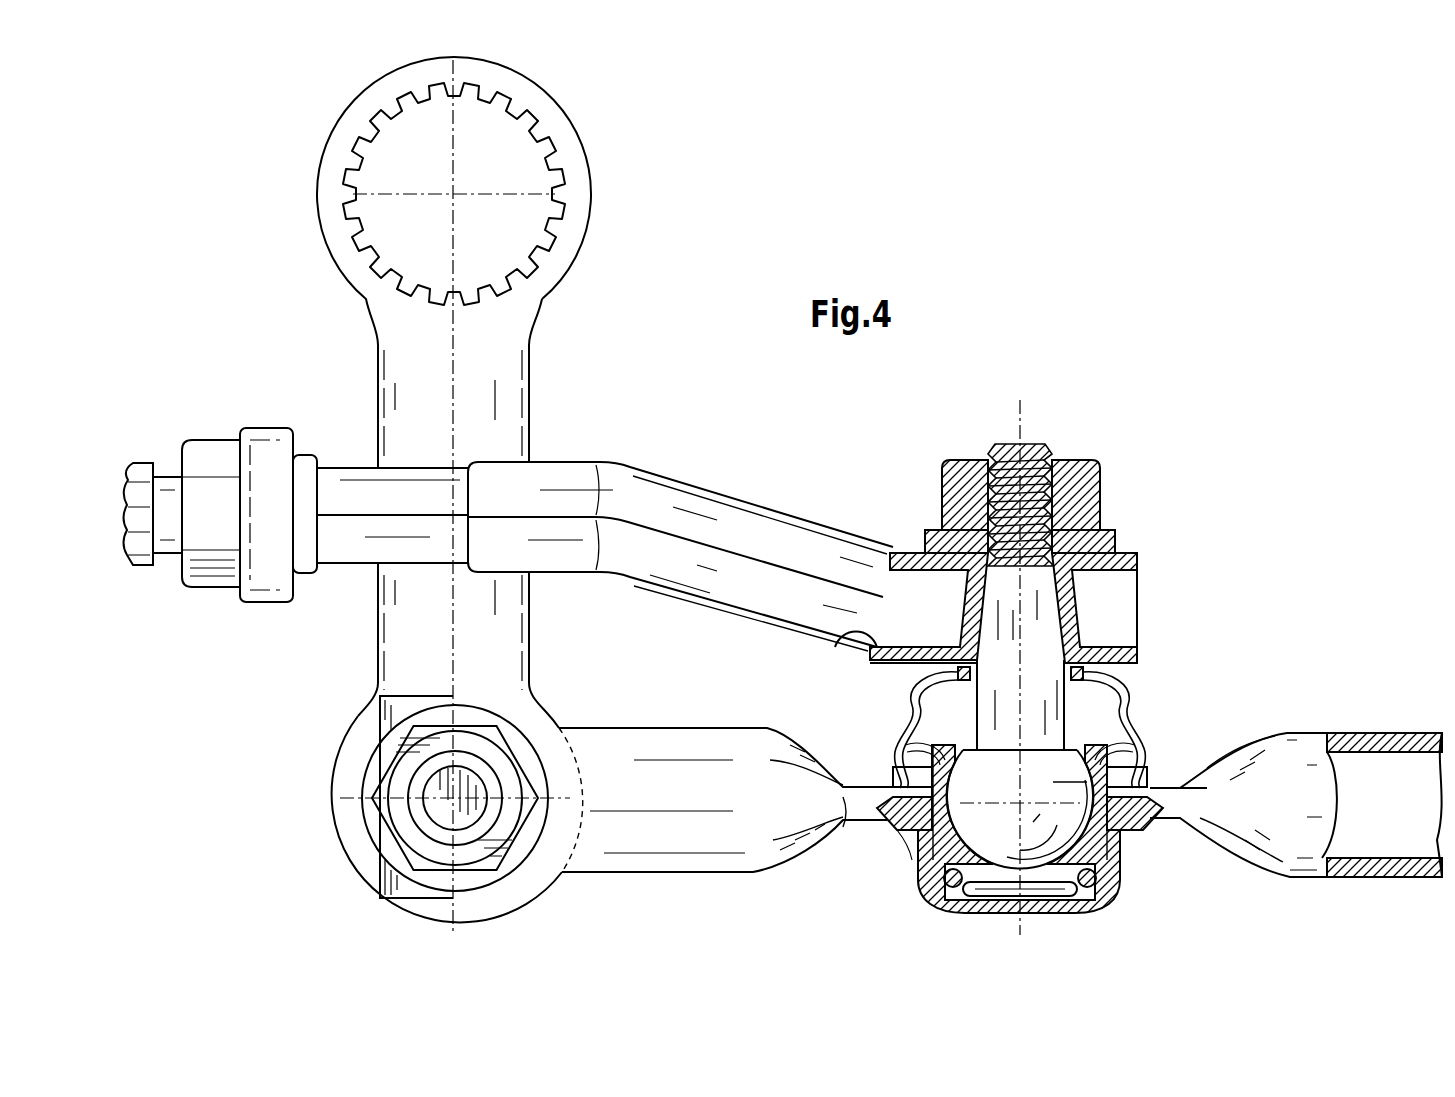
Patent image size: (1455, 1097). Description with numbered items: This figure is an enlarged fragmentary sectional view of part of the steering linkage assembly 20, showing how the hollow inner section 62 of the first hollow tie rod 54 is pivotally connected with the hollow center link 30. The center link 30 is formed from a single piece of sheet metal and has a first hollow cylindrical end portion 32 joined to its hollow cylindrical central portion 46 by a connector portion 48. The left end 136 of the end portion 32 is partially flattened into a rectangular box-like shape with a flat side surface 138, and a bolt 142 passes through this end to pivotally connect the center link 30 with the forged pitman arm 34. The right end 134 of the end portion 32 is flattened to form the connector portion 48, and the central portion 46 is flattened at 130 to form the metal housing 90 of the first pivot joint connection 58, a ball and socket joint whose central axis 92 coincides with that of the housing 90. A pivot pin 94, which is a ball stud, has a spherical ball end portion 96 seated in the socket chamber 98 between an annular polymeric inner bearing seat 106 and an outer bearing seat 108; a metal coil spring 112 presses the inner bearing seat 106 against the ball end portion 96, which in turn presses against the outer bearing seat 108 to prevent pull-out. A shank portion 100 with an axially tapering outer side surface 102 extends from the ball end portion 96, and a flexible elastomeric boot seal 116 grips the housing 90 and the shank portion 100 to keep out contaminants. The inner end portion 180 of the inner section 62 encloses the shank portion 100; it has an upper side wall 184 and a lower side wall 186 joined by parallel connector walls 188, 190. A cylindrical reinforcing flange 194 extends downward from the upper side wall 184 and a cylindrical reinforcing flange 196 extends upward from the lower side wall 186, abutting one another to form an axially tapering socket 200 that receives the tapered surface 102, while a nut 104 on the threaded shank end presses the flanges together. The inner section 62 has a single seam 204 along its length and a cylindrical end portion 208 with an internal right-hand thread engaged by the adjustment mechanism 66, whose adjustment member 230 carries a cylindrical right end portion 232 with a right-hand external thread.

The linkage assembly 20 is at (1172, 360).
The hollow center link 30 is at (1360, 732).
The first hollow cylindrical end portion 32 is at (643, 845).
The pitman arm 34 is at (515, 313).
The hollow cylindrical central portion 46 is at (1350, 877).
The connector portion 48 is at (1000, 905).
The first hollow tie rod 54 is at (683, 478).
The first pivot joint connection 58 is at (1100, 452).
The hollow inner section 62 is at (742, 500).
The adjustment mechanism 66 is at (213, 440).
The metal housing 90 is at (1103, 903).
The central axis 92 is at (1023, 425).
The pivot pin 94 is at (1093, 697).
The ball end portion 96 is at (1127, 767).
The socket chamber 98 is at (912, 830).
The shank portion 100 is at (1127, 676).
The axially tapering outer side surface 102 is at (945, 675).
The nut 104 is at (958, 472).
The inner bearing seat 106 is at (1110, 878).
The outer bearing seat 108 is at (905, 750).
The metal coil spring 112 is at (1043, 882).
The flexible elastomeric boot seal 116 is at (1127, 708).
The flattened end portion 130 is at (1150, 830).
The right end 134 is at (845, 805).
The left end 136 is at (378, 868).
The flat side surface 138 is at (400, 885).
The bolt 142 is at (440, 788).
The inner end portion 180 is at (1145, 551).
The upper side wall 184 is at (915, 551).
The lower side wall 186 is at (857, 615).
The connector wall 188 is at (730, 568).
The connector wall 190 is at (848, 574).
The cylindrical reinforcing flange 194 is at (1072, 583).
The cylindrical reinforcing flange 196 is at (1075, 630).
The axially tapering socket 200 is at (1048, 545).
The seam 204 is at (600, 480).
The cylindrical end portion 208 is at (348, 490).
The adjustment member 230 is at (145, 470).
The cylindrical right end portion 232 is at (168, 545).